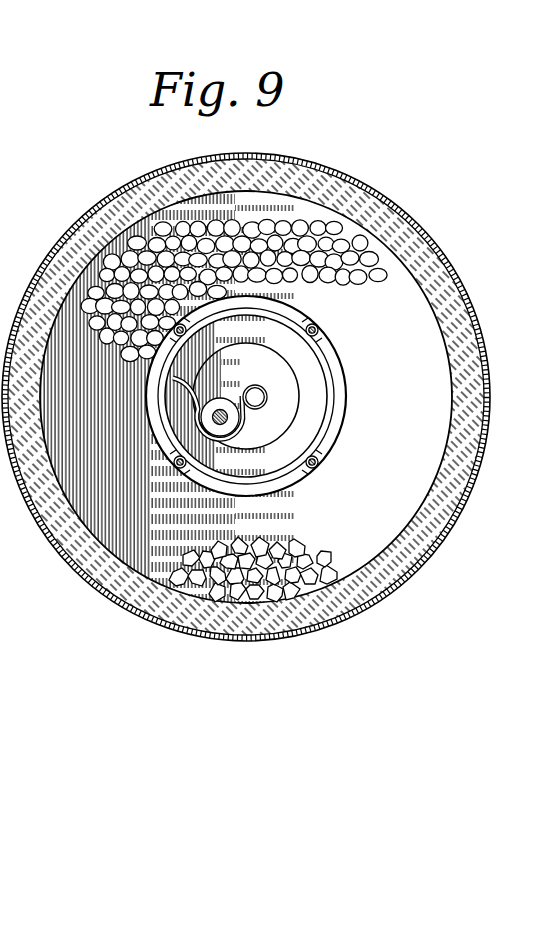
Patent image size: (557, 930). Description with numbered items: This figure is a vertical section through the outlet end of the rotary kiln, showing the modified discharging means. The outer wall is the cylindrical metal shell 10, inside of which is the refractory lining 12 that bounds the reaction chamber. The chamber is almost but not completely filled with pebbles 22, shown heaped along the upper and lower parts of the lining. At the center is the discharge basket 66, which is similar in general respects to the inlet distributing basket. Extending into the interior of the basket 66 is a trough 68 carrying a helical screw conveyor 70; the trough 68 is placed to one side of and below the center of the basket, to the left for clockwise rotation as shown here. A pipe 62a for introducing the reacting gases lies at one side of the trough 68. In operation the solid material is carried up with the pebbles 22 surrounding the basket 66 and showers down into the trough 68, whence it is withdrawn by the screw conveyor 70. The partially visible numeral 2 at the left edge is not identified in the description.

The cylindrical metal shell 10 is at (421, 229).
The refractory lining 12 is at (316, 184).
The drum body 2 is at (147, 398).
The pebbles 22 is at (313, 255).
The discharge basket 66 is at (336, 414).
The helical screw conveyor 70 is at (232, 428).
The trough 68 is at (245, 413).
The pipe 62a is at (255, 385).